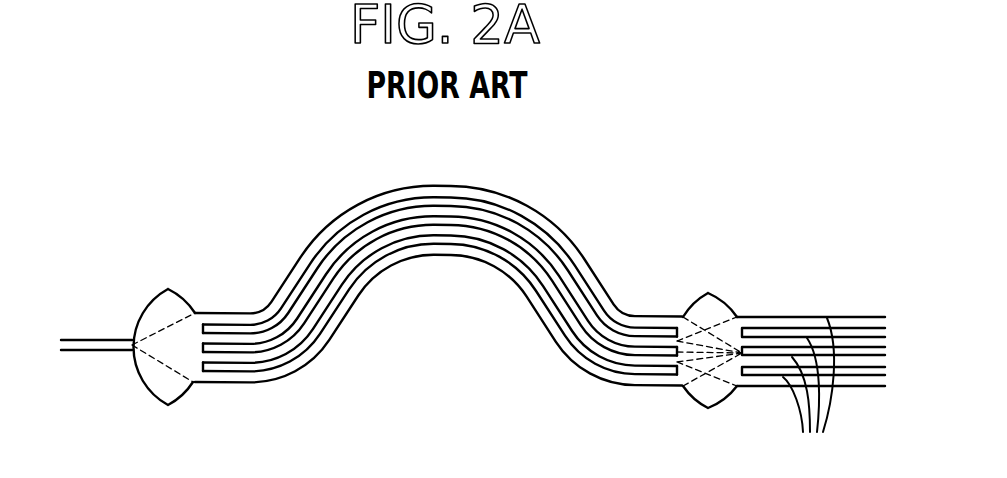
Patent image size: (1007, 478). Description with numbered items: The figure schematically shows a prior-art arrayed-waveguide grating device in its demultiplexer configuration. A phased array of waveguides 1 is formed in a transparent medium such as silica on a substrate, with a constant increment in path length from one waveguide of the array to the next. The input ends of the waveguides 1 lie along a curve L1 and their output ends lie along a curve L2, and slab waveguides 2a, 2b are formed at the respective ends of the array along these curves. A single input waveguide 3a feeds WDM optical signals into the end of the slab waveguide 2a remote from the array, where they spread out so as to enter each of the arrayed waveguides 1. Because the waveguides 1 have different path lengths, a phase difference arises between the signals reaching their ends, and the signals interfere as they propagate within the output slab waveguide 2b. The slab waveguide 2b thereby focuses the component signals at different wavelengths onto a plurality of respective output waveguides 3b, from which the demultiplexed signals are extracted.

The phased array of waveguides 1 is at (296, 210).
The slab waveguide 2a is at (150, 290).
The slab waveguide 2b is at (724, 297).
The input waveguide 3a is at (87, 352).
The output waveguides 3b is at (811, 393).
The curve L1 is at (192, 382).
The curve L2 is at (693, 400).